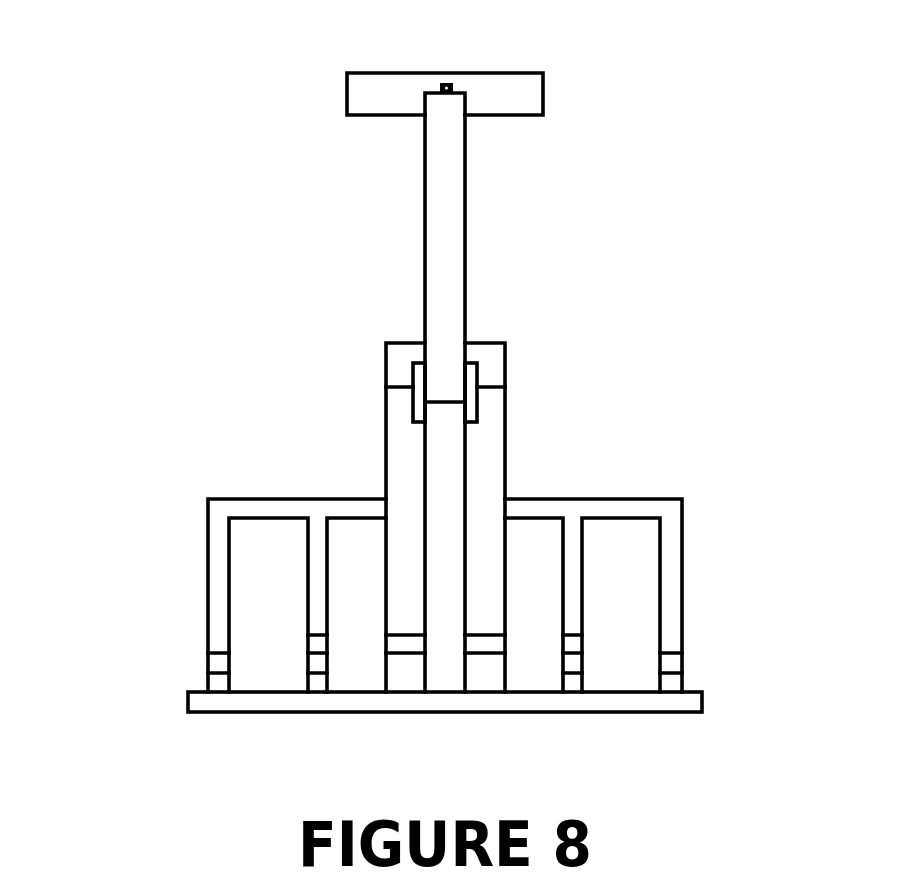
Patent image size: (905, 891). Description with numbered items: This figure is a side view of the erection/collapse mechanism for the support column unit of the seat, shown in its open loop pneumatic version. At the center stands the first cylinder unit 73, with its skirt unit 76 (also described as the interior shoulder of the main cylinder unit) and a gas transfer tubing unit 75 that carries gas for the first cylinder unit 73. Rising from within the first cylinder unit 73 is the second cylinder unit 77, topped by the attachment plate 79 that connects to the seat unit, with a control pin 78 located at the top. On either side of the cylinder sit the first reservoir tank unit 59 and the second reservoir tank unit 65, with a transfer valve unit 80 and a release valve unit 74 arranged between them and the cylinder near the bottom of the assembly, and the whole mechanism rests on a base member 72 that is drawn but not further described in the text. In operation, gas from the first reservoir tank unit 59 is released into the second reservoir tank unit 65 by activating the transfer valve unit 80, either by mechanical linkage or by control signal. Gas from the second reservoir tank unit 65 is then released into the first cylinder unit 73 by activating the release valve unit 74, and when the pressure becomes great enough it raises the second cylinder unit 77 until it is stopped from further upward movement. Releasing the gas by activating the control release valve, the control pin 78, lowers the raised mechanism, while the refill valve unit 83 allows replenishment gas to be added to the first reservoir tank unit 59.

The first reservoir tank unit 59 is at (257, 556).
The second reservoir tank unit 65 is at (367, 557).
The base plate 72 is at (705, 700).
The first cylinder unit 73 is at (383, 437).
The release valve unit 74 is at (383, 650).
The gas transfer tubing unit 75 is at (478, 383).
The skirt unit of first cylinder unit 76 is at (410, 385).
The second cylinder unit 77 is at (425, 262).
The control pin 78 is at (440, 80).
The attachment plate 79 is at (547, 92).
The transfer valve unit 80 is at (305, 648).
The refill valve unit 83 is at (206, 662).